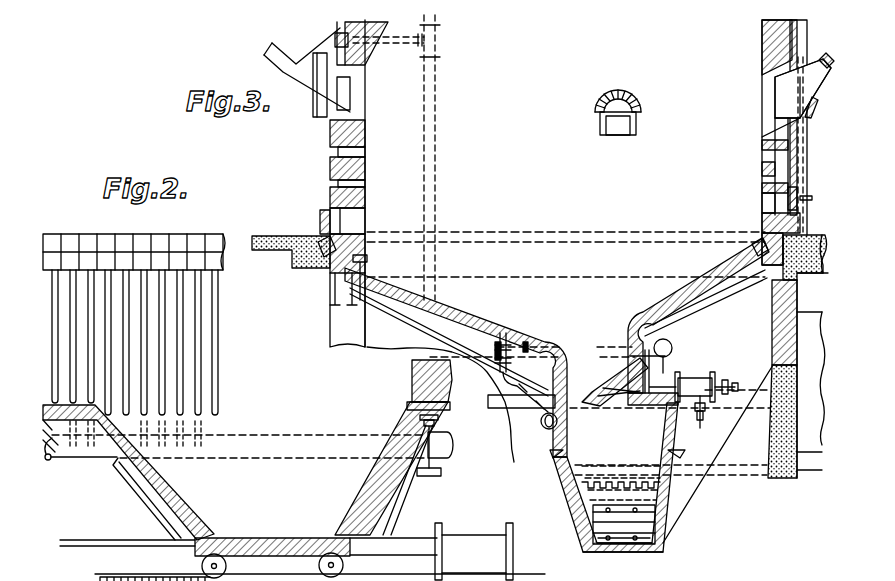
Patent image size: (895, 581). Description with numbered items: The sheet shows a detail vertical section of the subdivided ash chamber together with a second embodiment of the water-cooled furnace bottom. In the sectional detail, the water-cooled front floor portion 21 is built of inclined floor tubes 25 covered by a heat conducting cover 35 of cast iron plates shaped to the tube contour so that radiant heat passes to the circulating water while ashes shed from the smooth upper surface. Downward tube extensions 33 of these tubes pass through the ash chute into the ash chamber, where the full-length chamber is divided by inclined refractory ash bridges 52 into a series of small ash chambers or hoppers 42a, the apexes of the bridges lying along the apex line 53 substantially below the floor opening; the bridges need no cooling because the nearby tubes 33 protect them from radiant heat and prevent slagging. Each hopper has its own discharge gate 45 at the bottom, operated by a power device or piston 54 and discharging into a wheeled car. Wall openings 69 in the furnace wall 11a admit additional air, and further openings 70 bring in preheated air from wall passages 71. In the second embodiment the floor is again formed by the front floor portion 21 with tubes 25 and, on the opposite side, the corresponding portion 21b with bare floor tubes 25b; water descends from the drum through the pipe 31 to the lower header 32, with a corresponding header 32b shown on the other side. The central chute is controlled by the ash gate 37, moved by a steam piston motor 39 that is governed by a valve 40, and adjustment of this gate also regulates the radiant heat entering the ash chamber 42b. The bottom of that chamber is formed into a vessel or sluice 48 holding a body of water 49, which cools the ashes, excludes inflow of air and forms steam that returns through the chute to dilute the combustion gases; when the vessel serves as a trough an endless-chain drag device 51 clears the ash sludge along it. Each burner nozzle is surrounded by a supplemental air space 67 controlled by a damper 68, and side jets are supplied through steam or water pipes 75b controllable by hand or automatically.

In FIG. 3, the furnace wall 11a is at (330, 165).
In FIG. 3, the front floor portion 21 is at (463, 313).
In FIG. 3, the inclined chute 21b is at (710, 290).
In FIG. 3, the floor tubes 25 is at (497, 315).
In FIG. 3, the floor tubes 25b is at (733, 280).
In FIG. 3, the pipe 31 is at (437, 163).
In FIG. 3, the lower header 32 is at (547, 428).
In FIG. 3, the valve 32b is at (672, 345).
In FIG. 2, the downward tube extensions 33 is at (219, 330).
In FIG. 2, the heat conducting cover 35 is at (134, 241).
In FIG. 3, the gate 37 is at (603, 400).
In FIG. 3, the motor 39 is at (707, 380).
In FIG. 3, the valve 40 is at (705, 415).
In FIG. 2, the small ash chambers 42a is at (266, 484).
In FIG. 3, the ash chamber 42b is at (632, 439).
In FIG. 2, the discharge gates 45 is at (272, 538).
In FIG. 3, the vessel or sluice 48 is at (590, 530).
In FIG. 3, the body of water 49 is at (670, 503).
In FIG. 3, the endless-chain drag device 51 is at (657, 527).
In FIG. 2, the ash bridges 52 is at (178, 478).
In FIG. 2, the apex line 53 is at (410, 402).
In FIG. 2, the power device or piston 54 is at (485, 561).
In FIG. 3, the supplemental air space 67 is at (352, 118).
In FIG. 3, the damper 68 is at (315, 107).
In FIG. 3, the wall openings 69 is at (358, 190).
In FIG. 3, the openings 70 is at (762, 172).
In FIG. 3, the wall passages 71 is at (780, 158).
In FIG. 3, the steam or water pipes 75b is at (342, 322).